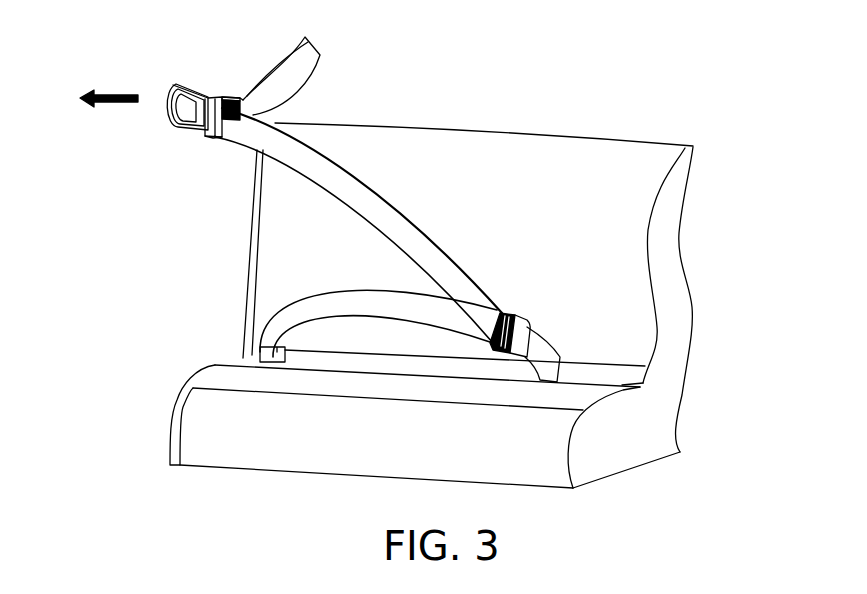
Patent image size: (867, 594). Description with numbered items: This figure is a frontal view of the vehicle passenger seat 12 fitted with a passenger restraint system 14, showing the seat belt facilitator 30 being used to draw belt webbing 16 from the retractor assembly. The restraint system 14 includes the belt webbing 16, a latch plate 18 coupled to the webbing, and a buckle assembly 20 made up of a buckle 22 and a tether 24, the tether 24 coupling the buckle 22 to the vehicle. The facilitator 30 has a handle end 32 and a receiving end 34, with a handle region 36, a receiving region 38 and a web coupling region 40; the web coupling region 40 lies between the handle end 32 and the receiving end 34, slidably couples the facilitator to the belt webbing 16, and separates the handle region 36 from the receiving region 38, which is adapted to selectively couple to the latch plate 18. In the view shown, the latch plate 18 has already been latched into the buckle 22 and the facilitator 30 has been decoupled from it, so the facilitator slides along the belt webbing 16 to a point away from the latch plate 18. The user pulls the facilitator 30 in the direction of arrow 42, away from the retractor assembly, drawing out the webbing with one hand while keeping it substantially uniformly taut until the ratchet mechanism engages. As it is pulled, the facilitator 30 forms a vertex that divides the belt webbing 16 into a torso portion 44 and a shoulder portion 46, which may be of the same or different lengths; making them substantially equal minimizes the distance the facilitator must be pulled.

The passenger seat 12 is at (709, 199).
The passenger restraint system 14 is at (346, 111).
The belt webbing 16 is at (313, 182).
The latch plate 18 is at (505, 311).
The buckle assembly 20 is at (535, 306).
The buckle 22 is at (514, 310).
The tether 24 is at (548, 336).
The seat belt facilitator 30 is at (178, 212).
The handle end 32 is at (156, 118).
The receiving end 34 is at (256, 84).
The handle region 36 is at (170, 137).
The receiving region 38 is at (234, 90).
The web coupling region 40 is at (209, 142).
The arrow 42 is at (103, 94).
The torso portion 44 is at (416, 216).
The shoulder portion 46 is at (316, 87).